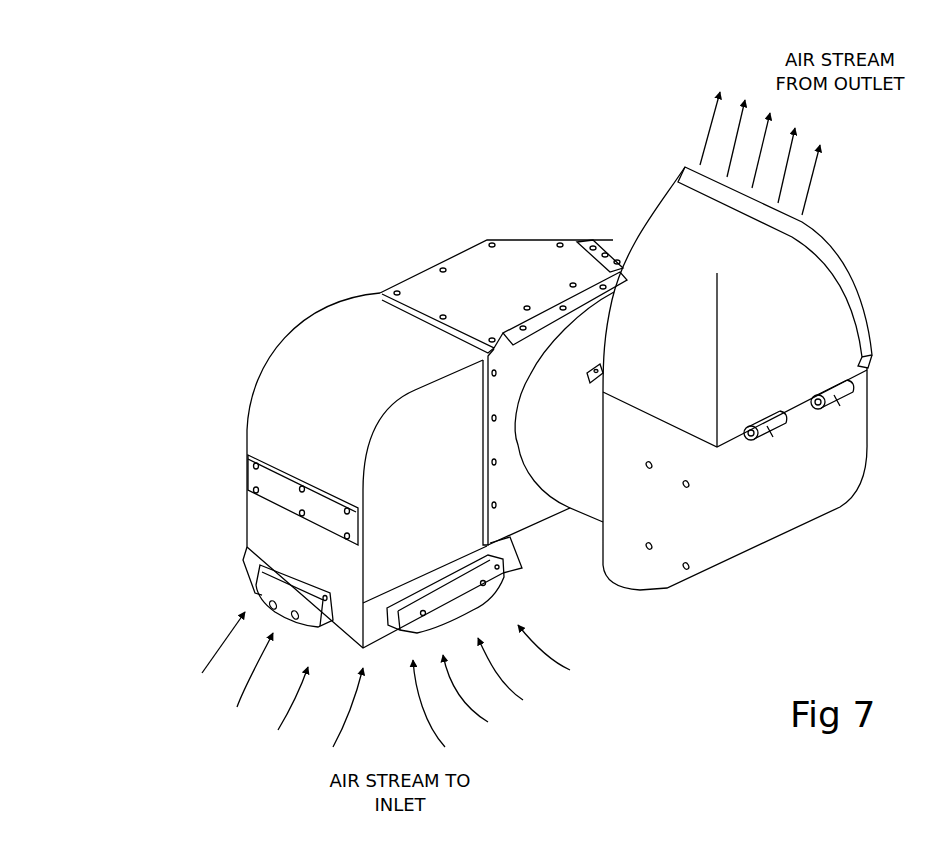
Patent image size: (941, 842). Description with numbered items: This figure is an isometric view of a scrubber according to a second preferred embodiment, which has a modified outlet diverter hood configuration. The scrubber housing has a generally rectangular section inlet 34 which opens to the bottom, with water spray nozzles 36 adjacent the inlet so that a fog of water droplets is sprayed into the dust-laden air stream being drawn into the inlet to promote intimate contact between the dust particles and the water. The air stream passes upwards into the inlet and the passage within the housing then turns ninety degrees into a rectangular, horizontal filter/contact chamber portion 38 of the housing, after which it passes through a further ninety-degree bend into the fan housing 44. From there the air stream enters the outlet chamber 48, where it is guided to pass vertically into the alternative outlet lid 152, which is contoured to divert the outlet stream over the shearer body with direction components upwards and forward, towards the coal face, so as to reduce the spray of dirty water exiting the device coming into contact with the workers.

The inlet 34 is at (433, 503).
The water spray nozzles 36 is at (258, 583).
The filter/contact chamber portion 38 is at (519, 295).
The fan housing 44 is at (581, 440).
The outlet chamber 48 is at (804, 484).
The outlet lid 152 is at (769, 311).